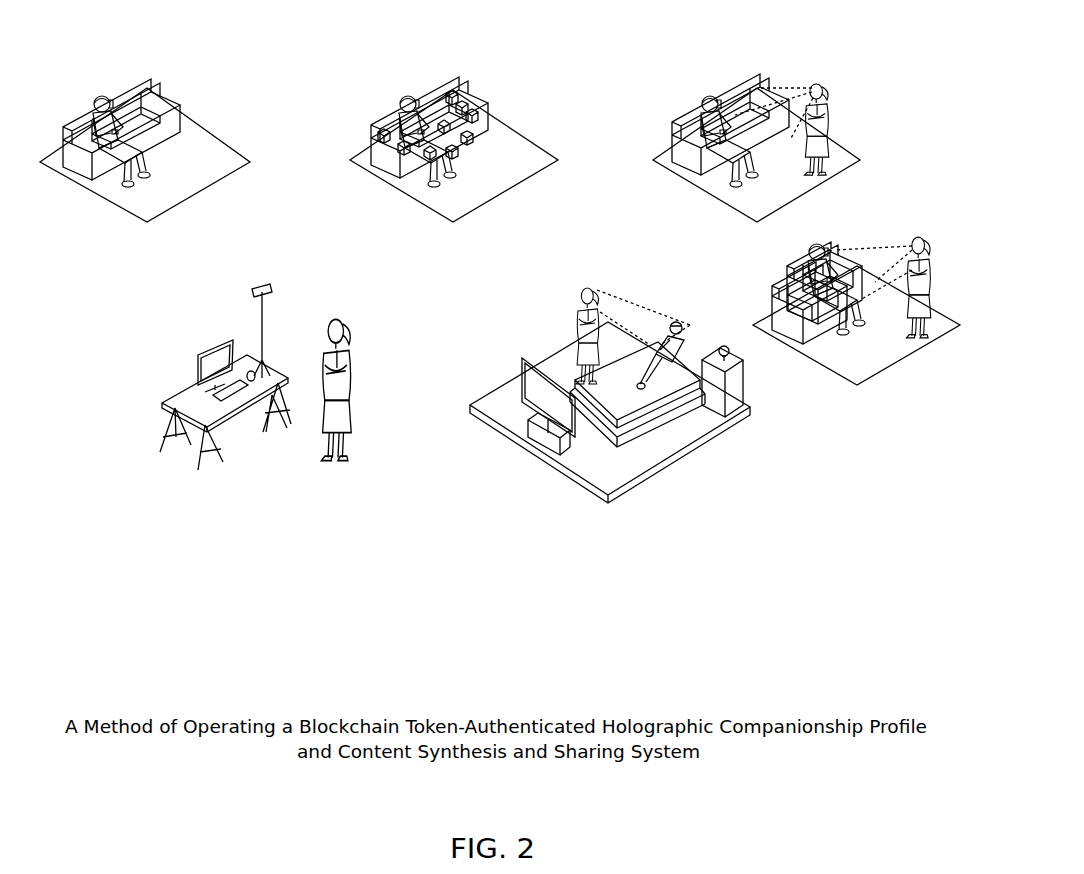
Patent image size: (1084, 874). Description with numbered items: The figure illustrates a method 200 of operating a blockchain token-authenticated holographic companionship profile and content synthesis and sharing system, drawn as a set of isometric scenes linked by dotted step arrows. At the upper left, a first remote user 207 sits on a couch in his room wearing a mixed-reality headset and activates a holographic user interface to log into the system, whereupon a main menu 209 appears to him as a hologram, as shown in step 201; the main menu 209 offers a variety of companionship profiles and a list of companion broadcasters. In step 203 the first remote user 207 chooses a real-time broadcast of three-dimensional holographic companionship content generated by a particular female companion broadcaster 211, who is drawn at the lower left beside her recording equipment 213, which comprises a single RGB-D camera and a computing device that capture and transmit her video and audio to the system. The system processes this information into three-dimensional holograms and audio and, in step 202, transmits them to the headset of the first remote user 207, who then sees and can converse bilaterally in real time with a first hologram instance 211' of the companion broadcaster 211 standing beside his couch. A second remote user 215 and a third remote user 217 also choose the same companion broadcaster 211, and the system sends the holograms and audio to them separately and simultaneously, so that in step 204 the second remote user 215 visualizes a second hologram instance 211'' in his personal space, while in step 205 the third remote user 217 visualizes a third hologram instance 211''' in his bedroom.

The method 200 is at (505, 652).
The step 201 is at (380, 200).
The step 202 is at (701, 207).
The step 203 is at (681, 200).
The step 204 is at (372, 340).
The step 205 is at (505, 452).
The first remote user 207 is at (106, 86).
The main menu 209 is at (492, 96).
The companion broadcaster 211 is at (295, 428).
The first hologram instance 211' is at (870, 105).
The second hologram instance 211'' is at (932, 248).
The third hologram instance 211''' is at (537, 336).
The recording equipment 213 is at (235, 297).
The second remote user 215 is at (856, 304).
The third remote user 217 is at (610, 396).